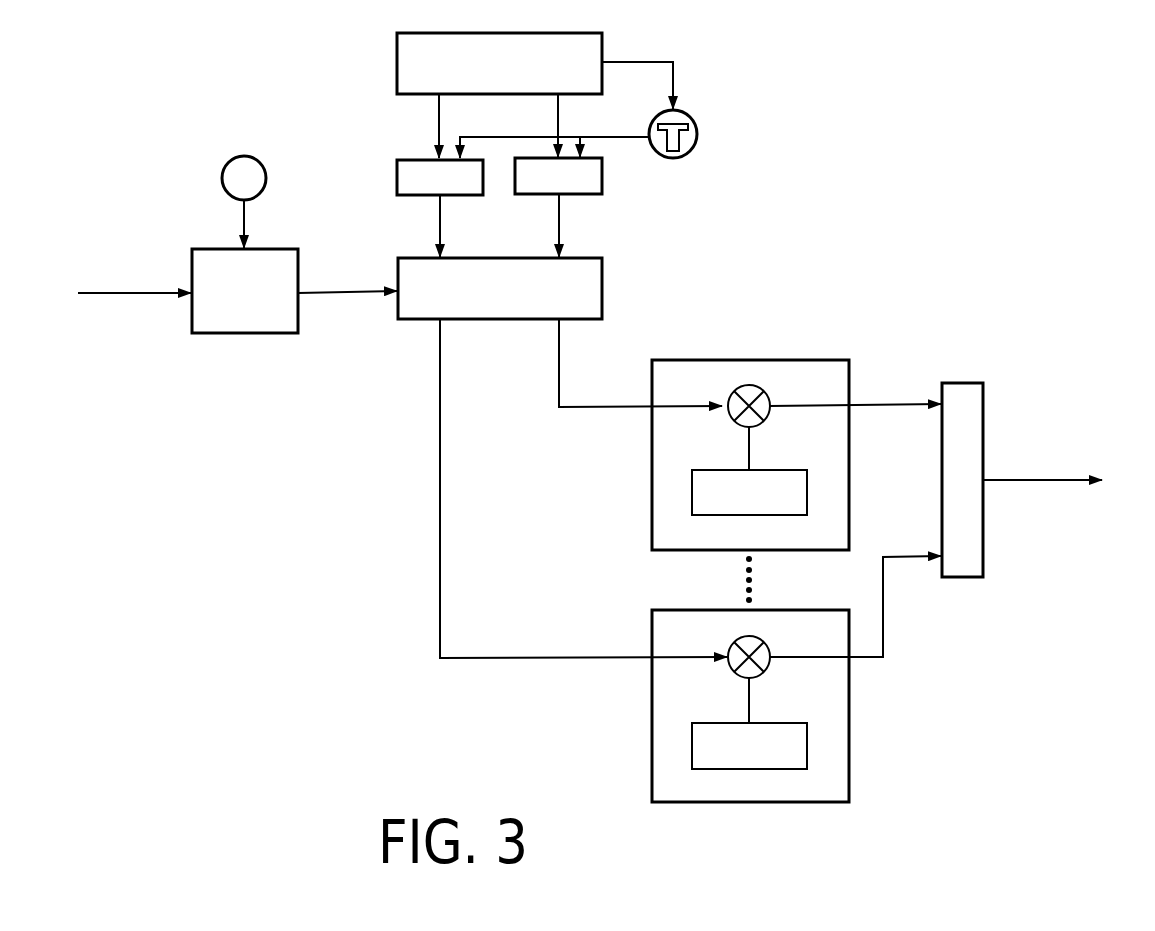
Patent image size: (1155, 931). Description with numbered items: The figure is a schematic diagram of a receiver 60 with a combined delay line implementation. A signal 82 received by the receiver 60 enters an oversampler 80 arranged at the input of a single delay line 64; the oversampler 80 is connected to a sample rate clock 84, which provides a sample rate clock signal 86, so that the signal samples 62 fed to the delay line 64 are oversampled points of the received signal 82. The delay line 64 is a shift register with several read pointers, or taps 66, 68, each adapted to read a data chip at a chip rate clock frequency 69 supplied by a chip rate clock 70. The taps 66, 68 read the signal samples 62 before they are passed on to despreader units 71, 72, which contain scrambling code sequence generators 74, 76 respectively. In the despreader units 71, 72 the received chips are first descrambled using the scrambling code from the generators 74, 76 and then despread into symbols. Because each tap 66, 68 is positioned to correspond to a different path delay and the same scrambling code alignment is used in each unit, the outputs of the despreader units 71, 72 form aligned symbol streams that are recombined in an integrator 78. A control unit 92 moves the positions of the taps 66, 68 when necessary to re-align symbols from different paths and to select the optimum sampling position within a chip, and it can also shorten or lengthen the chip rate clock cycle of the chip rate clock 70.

The receiver 60 is at (936, 186).
The signal samples 62 is at (350, 293).
The delay line 64 is at (500, 319).
The read pointer (tap) 66 is at (602, 172).
The read pointer (tap) 68 is at (397, 176).
The chip rate clock frequency 69 is at (625, 137).
The chip rate clock 70 is at (697, 136).
The despreader unit 71 is at (801, 356).
The despreader unit 72 is at (852, 755).
The scrambling code sequence generator 74 is at (692, 494).
The scrambling code sequence generator 76 is at (692, 745).
The integrator 78 is at (983, 434).
The oversampler 80 is at (247, 333).
The received signal 82 is at (137, 293).
The sample rate clock 84 is at (222, 178).
The sample rate clock signal 86 is at (244, 224).
The control unit 92 is at (397, 63).